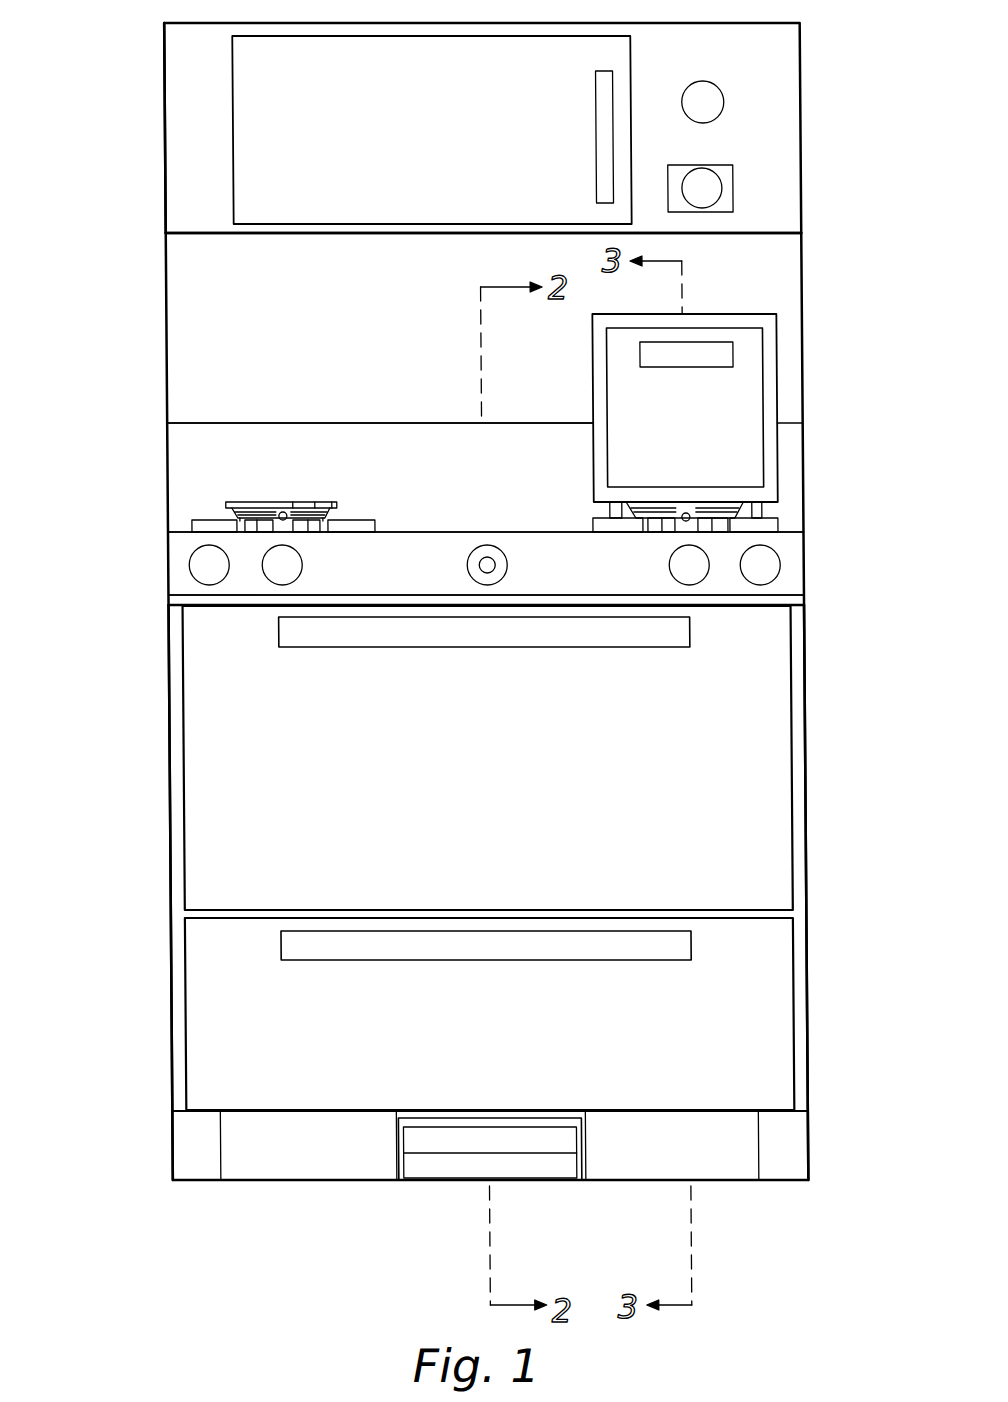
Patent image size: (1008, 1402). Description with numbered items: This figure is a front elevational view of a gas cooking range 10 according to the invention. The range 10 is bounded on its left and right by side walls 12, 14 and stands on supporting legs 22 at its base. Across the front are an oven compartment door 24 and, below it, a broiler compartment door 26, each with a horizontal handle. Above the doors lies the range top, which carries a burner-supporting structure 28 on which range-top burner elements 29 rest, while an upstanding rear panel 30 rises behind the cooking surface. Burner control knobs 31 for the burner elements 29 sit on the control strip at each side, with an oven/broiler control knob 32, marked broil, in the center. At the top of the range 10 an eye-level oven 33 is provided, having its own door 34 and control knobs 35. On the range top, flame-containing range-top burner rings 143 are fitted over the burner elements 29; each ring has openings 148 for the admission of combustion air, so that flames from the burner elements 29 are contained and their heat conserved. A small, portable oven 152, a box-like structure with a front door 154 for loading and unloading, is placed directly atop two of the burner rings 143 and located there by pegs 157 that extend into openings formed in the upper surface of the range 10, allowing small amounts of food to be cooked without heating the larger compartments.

The gas cooking range 10 is at (140, 417).
The side wall 12 is at (163, 785).
The side wall 14 is at (800, 680).
The supporting legs 22 is at (180, 1128).
The oven compartment door 24 is at (757, 760).
The broiler compartment door 26 is at (772, 1000).
The burner-supporting structure 28 is at (174, 540).
The range-top burner elements 29 is at (341, 504).
The upstanding rear panel 30 is at (230, 438).
The burner control knobs 31 is at (266, 572).
The oven/broiler control knob 32 is at (493, 563).
The eye-level oven 33 is at (202, 173).
The door 34 is at (617, 56).
The control knobs 35 is at (705, 183).
The flame-containing range-top burner rings 143 is at (303, 497).
The openings 148 is at (277, 509).
The small portable oven 152 is at (782, 343).
The front door 154 is at (747, 410).
The pegs 157 is at (614, 513).